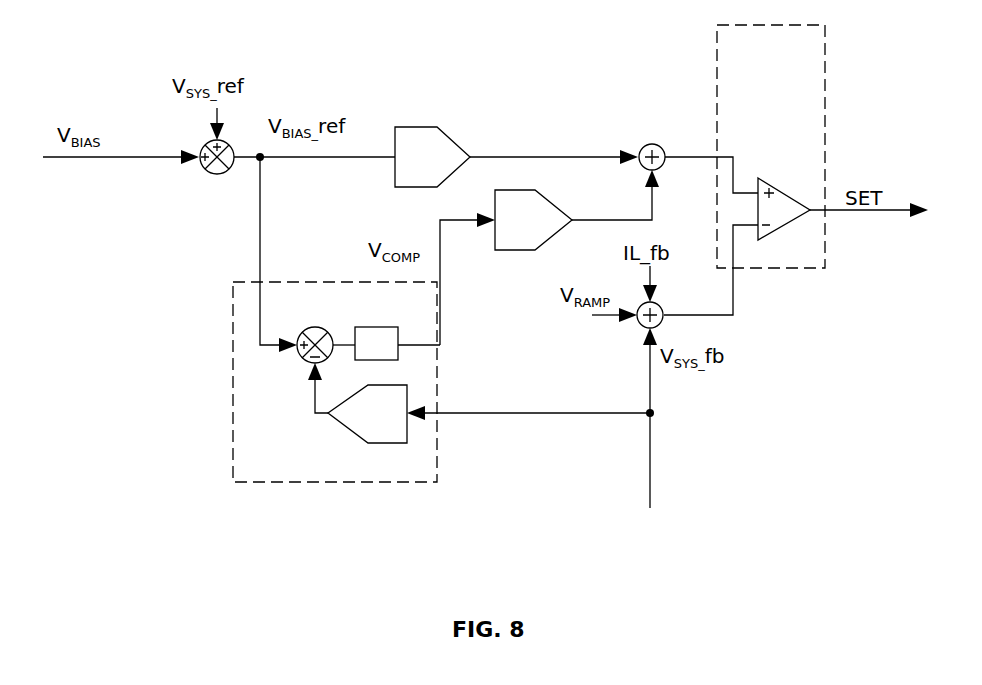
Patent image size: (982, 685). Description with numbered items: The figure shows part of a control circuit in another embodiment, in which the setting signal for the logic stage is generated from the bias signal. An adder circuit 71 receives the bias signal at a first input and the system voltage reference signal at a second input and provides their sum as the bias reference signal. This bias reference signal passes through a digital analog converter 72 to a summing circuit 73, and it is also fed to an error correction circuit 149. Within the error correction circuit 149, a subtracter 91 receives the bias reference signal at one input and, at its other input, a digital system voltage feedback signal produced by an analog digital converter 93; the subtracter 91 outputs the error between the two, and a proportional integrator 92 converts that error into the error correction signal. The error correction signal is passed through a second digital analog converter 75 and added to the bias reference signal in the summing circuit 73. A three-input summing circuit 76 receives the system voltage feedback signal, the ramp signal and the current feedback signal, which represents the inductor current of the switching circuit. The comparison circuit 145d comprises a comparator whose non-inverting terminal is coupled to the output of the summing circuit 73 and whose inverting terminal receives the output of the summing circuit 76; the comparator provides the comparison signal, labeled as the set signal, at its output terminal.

The adder circuit 71 is at (213, 176).
The digital analog converter 72 is at (449, 138).
The summing circuit 73 is at (663, 147).
The digital analog converter 75 is at (553, 203).
The summing circuit 76 is at (662, 307).
The subtracter 91 is at (330, 330).
The proportional integrator 92 is at (378, 327).
The analog digital converter 93 is at (365, 446).
The comparison circuit 145d is at (771, 146).
The error correction circuit 149 is at (335, 382).